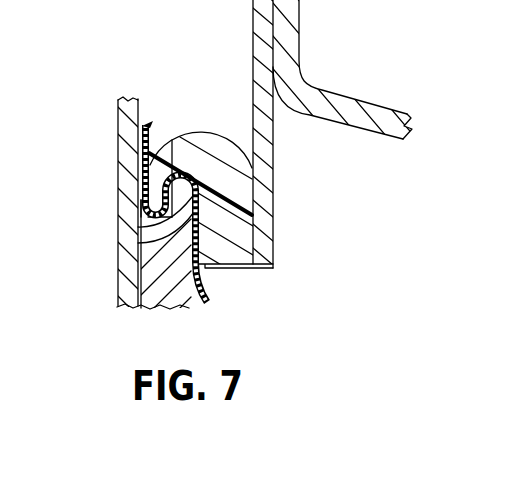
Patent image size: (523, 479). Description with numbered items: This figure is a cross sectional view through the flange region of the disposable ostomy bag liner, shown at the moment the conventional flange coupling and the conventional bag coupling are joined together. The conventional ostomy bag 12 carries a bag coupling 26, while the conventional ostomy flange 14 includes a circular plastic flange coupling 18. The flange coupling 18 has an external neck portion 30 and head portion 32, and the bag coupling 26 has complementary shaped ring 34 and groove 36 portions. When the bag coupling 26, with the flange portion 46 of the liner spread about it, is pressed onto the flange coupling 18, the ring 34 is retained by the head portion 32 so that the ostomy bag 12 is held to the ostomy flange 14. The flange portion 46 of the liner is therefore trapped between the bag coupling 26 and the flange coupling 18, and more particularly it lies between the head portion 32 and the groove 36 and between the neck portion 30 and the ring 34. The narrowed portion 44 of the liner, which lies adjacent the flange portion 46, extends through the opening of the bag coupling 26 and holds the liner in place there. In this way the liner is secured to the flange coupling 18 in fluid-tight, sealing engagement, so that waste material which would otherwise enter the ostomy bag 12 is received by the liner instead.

The ostomy bag 12 is at (326, 144).
The ostomy flange 14 is at (133, 72).
The flange coupling 18 is at (154, 297).
The bag coupling 26 is at (227, 133).
The neck portion 30 is at (141, 201).
The head portion 32 is at (172, 140).
The ring portion 34 is at (148, 240).
The groove portion 36 is at (122, 257).
The narrowed portion 44 is at (205, 295).
The flange portion 46 is at (144, 127).